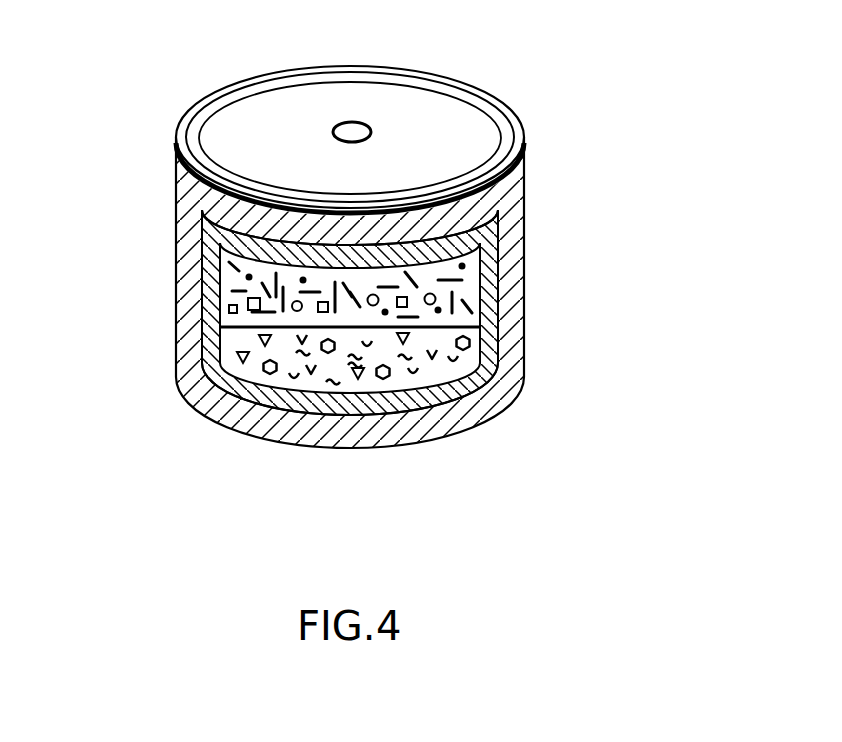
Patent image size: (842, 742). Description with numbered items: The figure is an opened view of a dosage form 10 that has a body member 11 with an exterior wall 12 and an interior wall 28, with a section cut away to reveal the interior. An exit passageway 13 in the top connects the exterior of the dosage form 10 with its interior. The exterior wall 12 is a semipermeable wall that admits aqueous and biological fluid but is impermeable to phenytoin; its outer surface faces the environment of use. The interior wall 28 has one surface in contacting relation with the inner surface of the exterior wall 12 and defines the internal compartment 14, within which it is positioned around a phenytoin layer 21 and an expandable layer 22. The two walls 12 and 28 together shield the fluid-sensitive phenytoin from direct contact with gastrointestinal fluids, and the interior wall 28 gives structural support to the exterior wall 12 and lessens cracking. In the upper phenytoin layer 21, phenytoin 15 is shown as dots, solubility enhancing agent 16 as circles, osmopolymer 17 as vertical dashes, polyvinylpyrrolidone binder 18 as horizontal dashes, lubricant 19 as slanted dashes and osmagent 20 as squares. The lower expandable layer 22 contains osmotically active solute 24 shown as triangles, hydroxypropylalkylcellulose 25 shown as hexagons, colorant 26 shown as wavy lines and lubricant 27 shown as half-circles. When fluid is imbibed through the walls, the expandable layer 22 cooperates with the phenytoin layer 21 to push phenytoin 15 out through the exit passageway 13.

The dosage form 10 is at (557, 93).
The body member 11 is at (525, 173).
The exterior wall 12 is at (513, 212).
The exit passageway 13 is at (372, 122).
The internal compartment 14 is at (487, 237).
The phenytoin 15 is at (466, 266).
The solubility enhancing agent 16 is at (481, 323).
The osmopolymer 17 is at (426, 316).
The polyvinylpyrrolidone binder 18 is at (240, 302).
The lubricant 19 is at (232, 272).
The osmagent 20 is at (226, 320).
The phenytoin layer 21 is at (240, 253).
The expandable layer 22 is at (235, 345).
The osmotically active solute 24 is at (205, 400).
The hydroxypropylalkylcellulose 25 is at (240, 358).
The colorant 26 is at (335, 385).
The lubricant 27 is at (295, 379).
The interior wall 28 is at (447, 422).